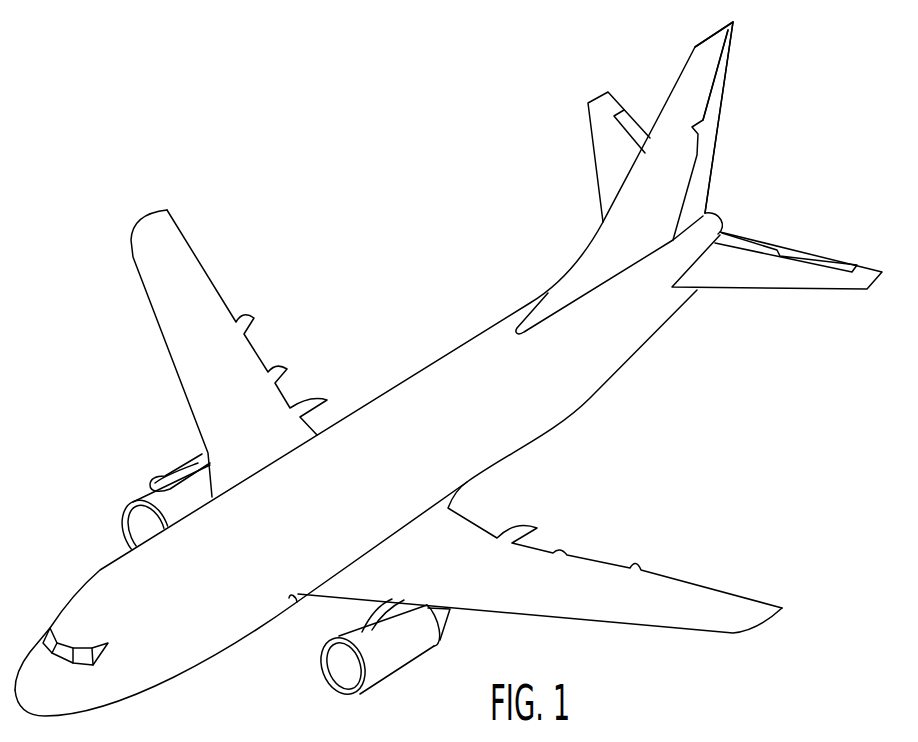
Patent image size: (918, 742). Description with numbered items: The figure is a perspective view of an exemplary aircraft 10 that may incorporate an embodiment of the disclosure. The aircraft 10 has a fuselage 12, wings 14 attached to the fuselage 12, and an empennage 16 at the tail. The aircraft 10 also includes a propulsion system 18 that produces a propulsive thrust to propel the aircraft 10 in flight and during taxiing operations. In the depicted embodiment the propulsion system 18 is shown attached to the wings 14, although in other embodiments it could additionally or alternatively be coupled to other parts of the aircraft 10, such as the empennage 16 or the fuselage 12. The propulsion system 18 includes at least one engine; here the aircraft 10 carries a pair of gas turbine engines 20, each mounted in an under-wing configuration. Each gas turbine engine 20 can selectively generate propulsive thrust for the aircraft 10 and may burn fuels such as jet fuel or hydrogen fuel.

The aircraft 10 is at (396, 203).
The fuselage 12 is at (502, 450).
The wings 14 is at (142, 262).
The empennage 16 is at (741, 146).
The propulsion system 18 is at (125, 436).
The gas turbine engines 20 is at (145, 492).